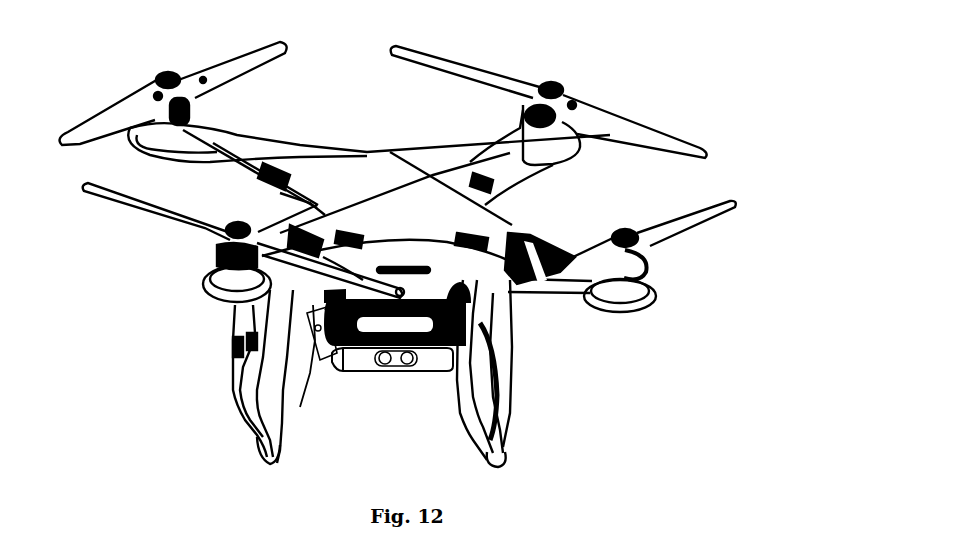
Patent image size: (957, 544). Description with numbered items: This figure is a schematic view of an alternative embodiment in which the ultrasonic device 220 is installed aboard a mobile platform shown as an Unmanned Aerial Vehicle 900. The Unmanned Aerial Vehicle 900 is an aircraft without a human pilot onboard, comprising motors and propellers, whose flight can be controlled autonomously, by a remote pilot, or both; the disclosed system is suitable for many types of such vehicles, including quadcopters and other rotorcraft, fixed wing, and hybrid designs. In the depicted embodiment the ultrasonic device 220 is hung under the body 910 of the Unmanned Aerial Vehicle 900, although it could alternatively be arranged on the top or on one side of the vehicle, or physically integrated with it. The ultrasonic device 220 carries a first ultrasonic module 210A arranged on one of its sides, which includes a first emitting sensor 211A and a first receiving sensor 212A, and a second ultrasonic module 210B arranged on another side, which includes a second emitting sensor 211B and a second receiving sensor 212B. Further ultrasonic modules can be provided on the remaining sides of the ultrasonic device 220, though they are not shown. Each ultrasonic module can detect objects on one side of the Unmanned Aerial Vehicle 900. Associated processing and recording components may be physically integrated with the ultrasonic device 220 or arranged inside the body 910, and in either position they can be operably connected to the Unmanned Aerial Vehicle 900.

The Unmanned Aerial Vehicle 900 is at (403, 253).
The body 910 is at (374, 149).
The ultrasonic device 220 is at (380, 364).
The first ultrasonic module 210A is at (393, 371).
The second ultrasonic module 210B is at (327, 357).
The first emitting sensor 211A is at (405, 367).
The second emitting sensor 211B is at (323, 357).
The first receiving sensor 212A is at (382, 371).
The second receiving sensor 212B is at (316, 348).